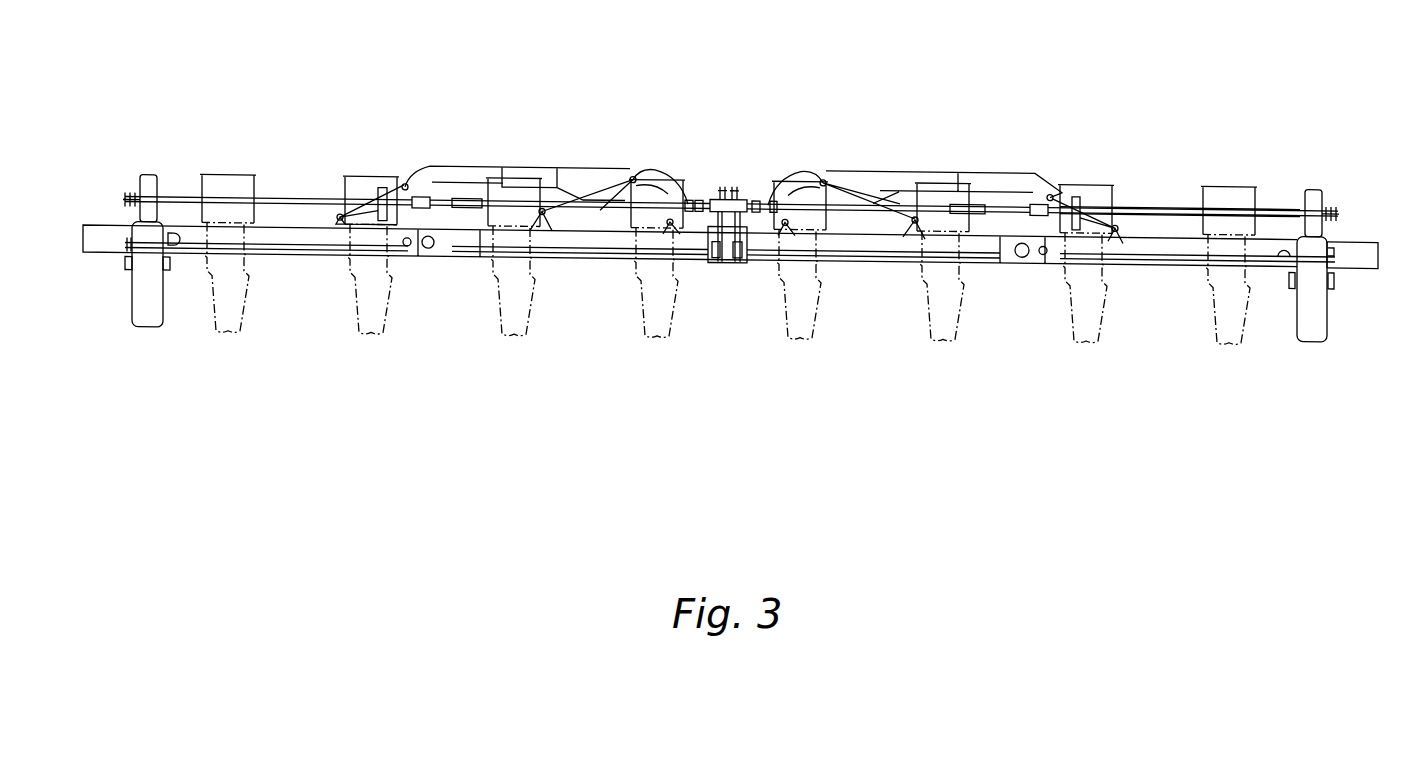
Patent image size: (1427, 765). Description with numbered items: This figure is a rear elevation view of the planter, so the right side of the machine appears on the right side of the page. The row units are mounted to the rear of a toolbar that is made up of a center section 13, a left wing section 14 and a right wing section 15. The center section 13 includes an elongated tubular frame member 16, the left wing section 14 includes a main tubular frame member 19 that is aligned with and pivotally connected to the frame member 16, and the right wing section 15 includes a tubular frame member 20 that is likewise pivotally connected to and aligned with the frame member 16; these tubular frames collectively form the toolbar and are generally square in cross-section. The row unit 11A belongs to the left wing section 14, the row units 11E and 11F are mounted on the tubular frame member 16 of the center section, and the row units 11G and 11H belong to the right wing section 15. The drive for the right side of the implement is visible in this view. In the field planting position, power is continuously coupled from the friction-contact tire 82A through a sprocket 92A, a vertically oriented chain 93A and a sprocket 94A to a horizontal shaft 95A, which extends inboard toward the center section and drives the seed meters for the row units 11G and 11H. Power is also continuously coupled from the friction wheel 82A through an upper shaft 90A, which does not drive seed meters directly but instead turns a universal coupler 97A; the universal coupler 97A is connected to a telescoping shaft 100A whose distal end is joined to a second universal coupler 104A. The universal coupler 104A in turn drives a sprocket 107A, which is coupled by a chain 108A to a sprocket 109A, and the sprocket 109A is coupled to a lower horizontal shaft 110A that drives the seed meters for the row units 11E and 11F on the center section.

The center section 13 is at (727, 217).
The sprocket 107A is at (727, 169).
The second universal joint 104A is at (748, 184).
The chain 108A is at (720, 261).
The sprocket 109A is at (736, 256).
The telescoping shaft 100A is at (815, 195).
The universal joint 97A is at (1036, 180).
The upper shaft 90A is at (1135, 191).
The friction-contact tire 82A is at (1322, 174).
The sprocket 92A is at (1340, 196).
The chain 93A is at (1337, 220).
The sprocket 94A is at (1335, 249).
The horizontal shaft 95A is at (1268, 237).
The tubular frame member 20 is at (290, 233).
The right wing section 15 is at (288, 262).
The main tubular frame member 19 is at (1151, 249).
The left wing section 14 is at (1198, 381).
The elongated tubular frame member 16 is at (1032, 250).
The lower horizontal shaft 110A is at (872, 247).
The row unit 11A is at (218, 319).
The row unit 11E is at (800, 328).
The row unit 11F is at (947, 329).
The row unit 11G is at (1086, 329).
The row unit 11H is at (1232, 320).